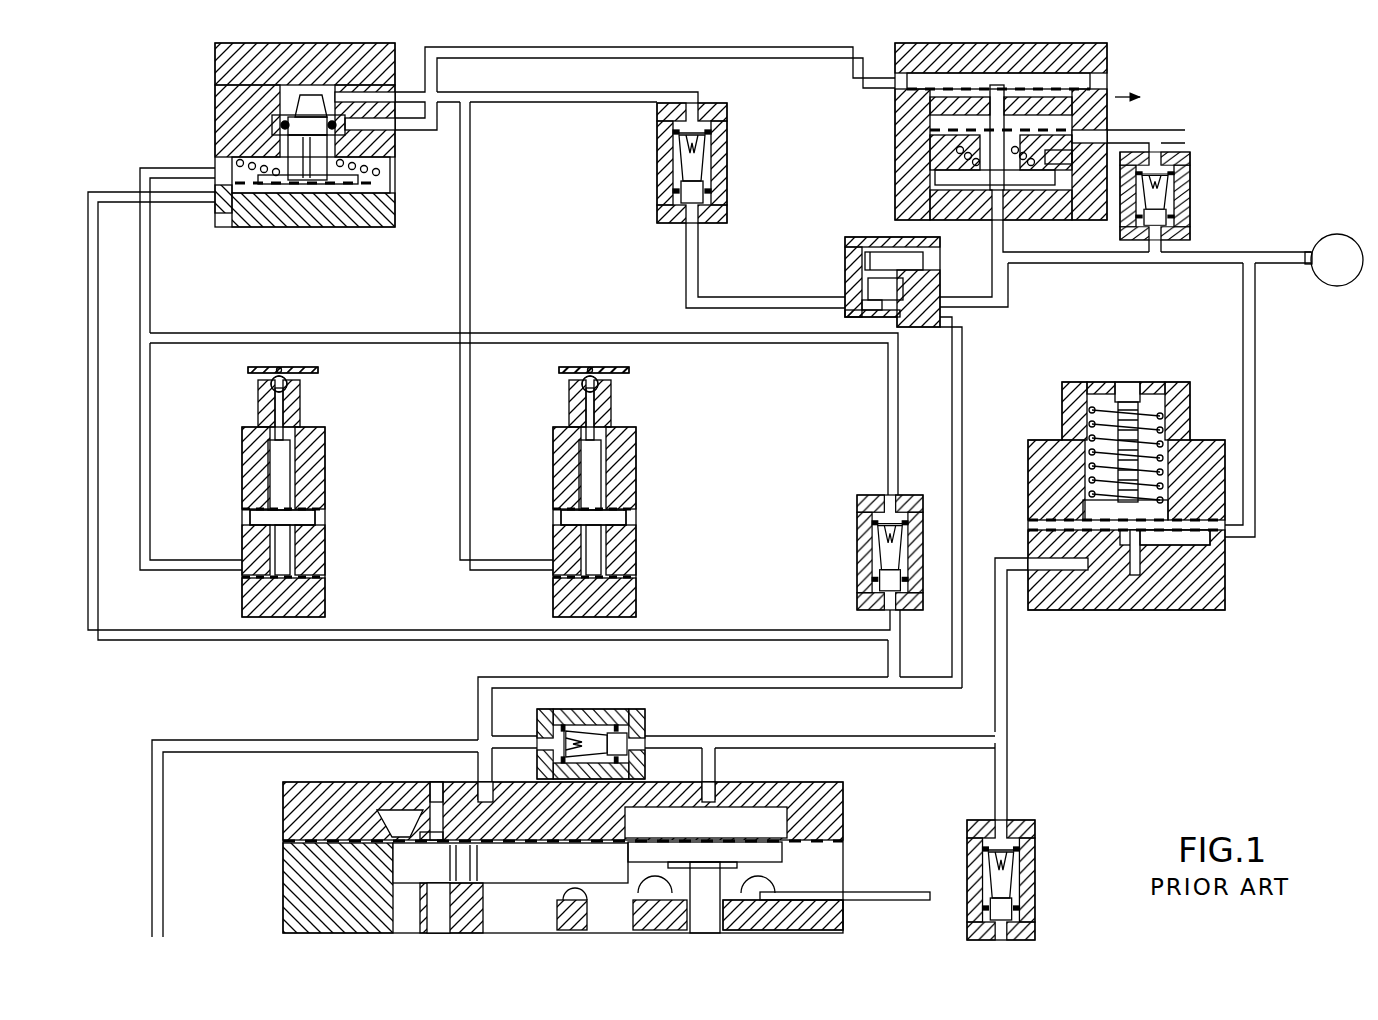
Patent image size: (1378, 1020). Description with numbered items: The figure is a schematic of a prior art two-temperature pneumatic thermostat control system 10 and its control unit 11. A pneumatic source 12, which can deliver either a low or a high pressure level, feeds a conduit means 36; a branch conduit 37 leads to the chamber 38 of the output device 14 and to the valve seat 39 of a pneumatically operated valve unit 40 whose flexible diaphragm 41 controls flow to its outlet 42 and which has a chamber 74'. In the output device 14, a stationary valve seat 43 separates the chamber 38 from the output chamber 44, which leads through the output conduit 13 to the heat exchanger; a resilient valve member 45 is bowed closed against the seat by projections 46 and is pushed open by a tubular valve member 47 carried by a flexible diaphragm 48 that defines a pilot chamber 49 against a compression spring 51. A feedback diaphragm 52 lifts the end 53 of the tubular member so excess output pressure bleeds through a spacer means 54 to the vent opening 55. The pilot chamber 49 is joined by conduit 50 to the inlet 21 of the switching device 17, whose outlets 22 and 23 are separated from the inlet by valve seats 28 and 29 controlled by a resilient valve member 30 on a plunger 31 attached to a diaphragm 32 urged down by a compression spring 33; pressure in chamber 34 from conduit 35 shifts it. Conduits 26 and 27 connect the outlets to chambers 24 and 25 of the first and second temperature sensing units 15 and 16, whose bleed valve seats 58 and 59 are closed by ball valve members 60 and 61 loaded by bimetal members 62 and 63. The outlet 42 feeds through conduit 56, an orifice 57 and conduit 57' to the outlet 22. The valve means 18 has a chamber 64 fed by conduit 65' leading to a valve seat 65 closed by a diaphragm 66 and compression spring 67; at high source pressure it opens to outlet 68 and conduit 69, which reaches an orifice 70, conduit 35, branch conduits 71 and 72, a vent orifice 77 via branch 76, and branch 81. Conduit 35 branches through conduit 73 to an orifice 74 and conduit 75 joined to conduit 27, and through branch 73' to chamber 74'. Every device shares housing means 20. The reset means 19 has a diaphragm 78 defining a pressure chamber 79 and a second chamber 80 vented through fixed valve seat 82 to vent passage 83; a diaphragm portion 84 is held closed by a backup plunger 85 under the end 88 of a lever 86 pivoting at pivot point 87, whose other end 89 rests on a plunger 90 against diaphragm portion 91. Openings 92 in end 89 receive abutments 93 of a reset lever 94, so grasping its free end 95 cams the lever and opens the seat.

The two-temperature pneumatic thermostat control system 10 is at (1250, 88).
The control unit 11 is at (1238, 172).
The pneumatic source 12 is at (1337, 234).
The output conduit 13 is at (1178, 128).
The output device 14 is at (1005, 136).
The first temperature sensing unit 15 is at (608, 481).
The second temperature sensing unit 16 is at (290, 481).
The switching device 17 is at (278, 156).
The pneumatically operated valve means 18 is at (1129, 490).
The manually operated reset means 19 is at (591, 850).
The housing means 20 is at (365, 48).
The inlet 21 is at (372, 142).
The outlet 22 is at (370, 98).
The outlet 23 is at (215, 172).
The chamber 24 is at (596, 552).
The chamber 25 is at (285, 548).
The conduit means 26 is at (472, 286).
The conduit means 27 is at (152, 455).
The valve seat 28 is at (288, 120).
The valve seat 29 is at (262, 160).
The movable resilient valve member 30 is at (275, 128).
The plunger 31 is at (360, 170).
The flexible diaphragm 32 is at (300, 186).
The compression spring 33 is at (372, 185).
The chamber 34 is at (255, 198).
The conduit means 35 is at (88, 278).
The conduit means 36 is at (1108, 266).
The branch conduit means 37 is at (1008, 295).
The chamber 38 is at (1075, 205).
The valve seat 39 is at (866, 280).
The pneumatically operated valve unit 40 is at (845, 259).
The flexible diaphragm 41 is at (878, 258).
The outlet 42 is at (852, 303).
The stationary valve seat 43 is at (1045, 192).
The output chamber 44 is at (1065, 133).
The resilient valve member 45 is at (945, 176).
The projections 46 is at (968, 195).
The tubular valve member 47 is at (958, 158).
The flexible diaphragm 48 is at (1030, 80).
The chamber 49 is at (1040, 72).
The conduit means 50 is at (672, 49).
The compression spring 51 is at (1058, 155).
The feedback diaphragm 52 is at (925, 122).
The end 53 is at (1005, 188).
The spacer means 54 is at (1040, 97).
The vent opening 55 is at (1142, 97).
The conduit means 56 is at (718, 290).
The orifice 57 is at (656, 163).
The conduit means 57' is at (567, 82).
The bleed valve seat 58 is at (583, 392).
The bleed valve seat 59 is at (272, 390).
The ball valve member 60 is at (600, 368).
The ball valve member 61 is at (288, 368).
The bimetal temperature sensing member 62 is at (568, 372).
The bimetal temperature sensing member 63 is at (258, 372).
The chamber 64 is at (1180, 540).
The valve seat 65 is at (1169, 589).
The conduit means 65' is at (1278, 400).
The flexible diaphragm 66 is at (1062, 532).
The compression spring 67 is at (1082, 472).
The outlet 68 is at (1040, 575).
The conduit means 69 is at (920, 735).
The orifice 70 is at (577, 720).
The branch conduit 71 is at (290, 742).
The branch conduit 72 is at (477, 765).
The branch conduit 73 is at (918, 643).
The branch conduit means 73' is at (956, 502).
The orifice 74 is at (861, 552).
The chamber 74' is at (857, 229).
The conduit means 75 is at (886, 415).
The branch conduit means 76 is at (1010, 790).
The orifice 77 is at (1038, 858).
The flexible diaphragm 78 is at (575, 826).
The pressure chamber 79 is at (770, 820).
The second chamber 80 is at (392, 812).
The branch conduit means 81 is at (718, 765).
The fixed valve seat 82 is at (420, 835).
The vent passage 83 is at (427, 793).
The diaphragm portion 84 is at (395, 865).
The backup plunger 85 is at (400, 870).
The pivotally mounted lever 86 is at (548, 872).
The pivot point 87 is at (556, 895).
The end 88 is at (400, 890).
The end 89 is at (738, 860).
The plunger 90 is at (726, 845).
The diaphragm portion 91 is at (668, 840).
The openings 92 is at (776, 880).
The abutments 93 is at (650, 900).
The reset lever 94 is at (750, 910).
The free end 95 is at (912, 892).